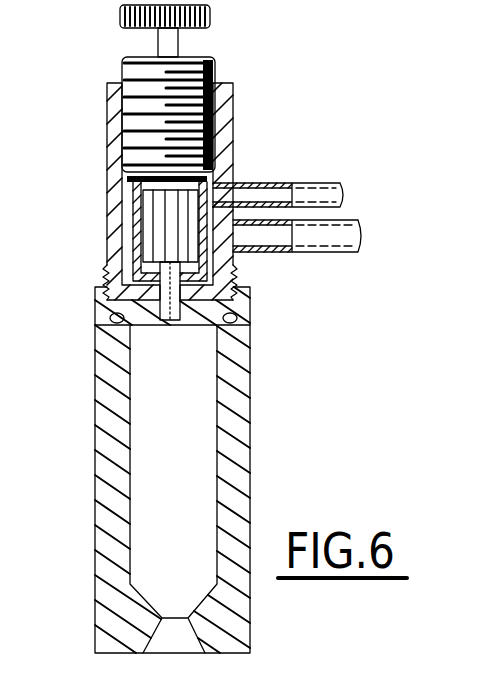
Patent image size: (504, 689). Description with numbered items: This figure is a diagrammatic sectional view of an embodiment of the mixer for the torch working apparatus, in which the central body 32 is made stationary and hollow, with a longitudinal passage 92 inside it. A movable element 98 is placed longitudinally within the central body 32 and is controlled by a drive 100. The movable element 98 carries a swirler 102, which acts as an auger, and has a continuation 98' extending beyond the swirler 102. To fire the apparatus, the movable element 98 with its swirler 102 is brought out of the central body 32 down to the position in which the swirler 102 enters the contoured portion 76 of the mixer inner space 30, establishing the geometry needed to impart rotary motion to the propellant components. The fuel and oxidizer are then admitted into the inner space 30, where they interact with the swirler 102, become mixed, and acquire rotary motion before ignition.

The drive 100 is at (212, 22).
The central body 32 is at (115, 180).
The inner space 30 is at (135, 227).
The movable element 98 is at (221, 199).
The continuation 98' is at (168, 320).
The contoured portion 76 is at (113, 310).
The longitudinal passage 92 is at (240, 318).
The swirler 102 is at (188, 250).